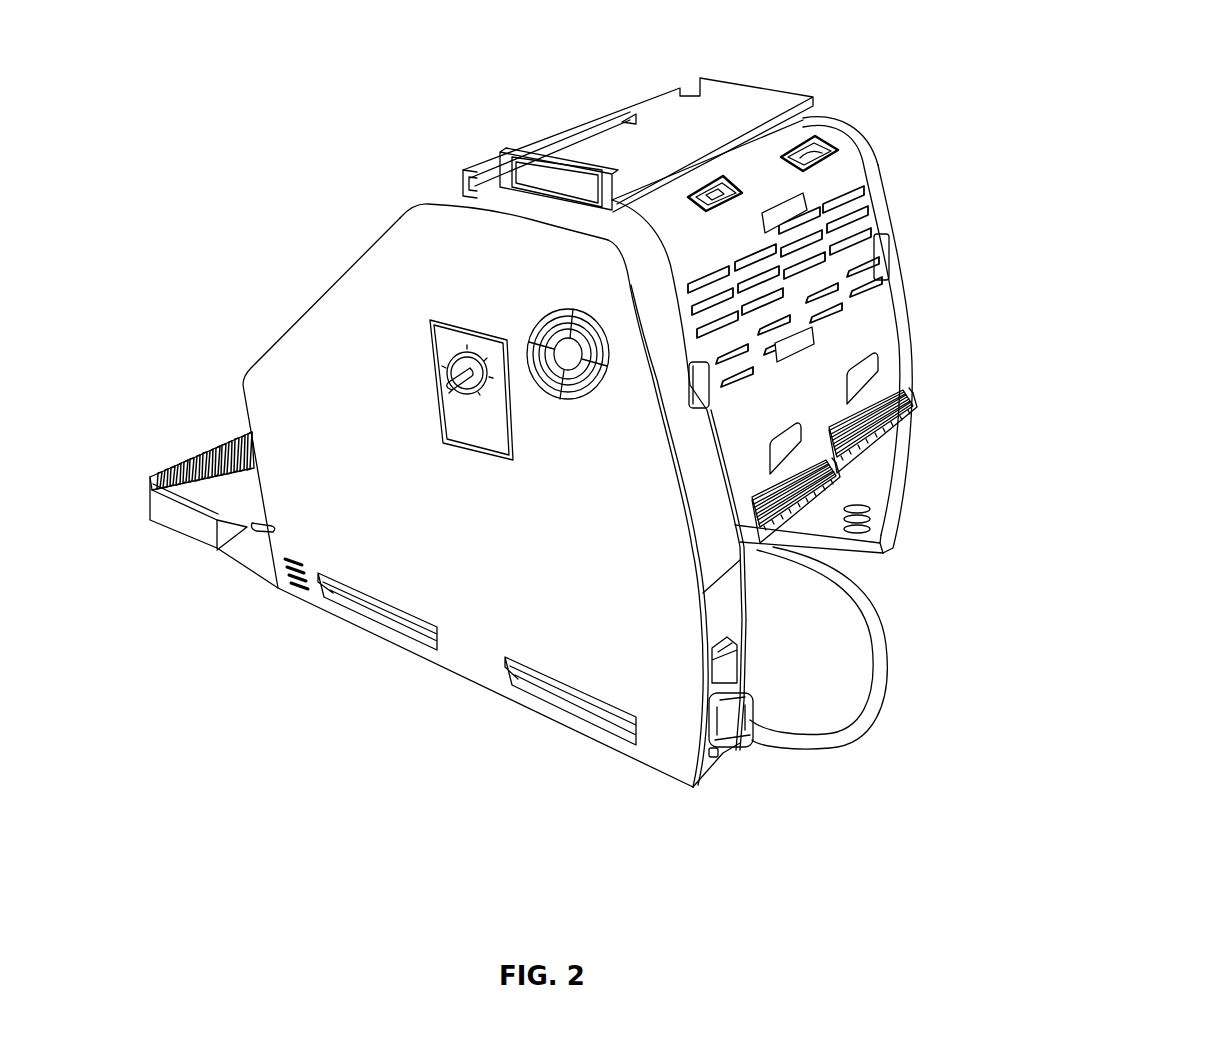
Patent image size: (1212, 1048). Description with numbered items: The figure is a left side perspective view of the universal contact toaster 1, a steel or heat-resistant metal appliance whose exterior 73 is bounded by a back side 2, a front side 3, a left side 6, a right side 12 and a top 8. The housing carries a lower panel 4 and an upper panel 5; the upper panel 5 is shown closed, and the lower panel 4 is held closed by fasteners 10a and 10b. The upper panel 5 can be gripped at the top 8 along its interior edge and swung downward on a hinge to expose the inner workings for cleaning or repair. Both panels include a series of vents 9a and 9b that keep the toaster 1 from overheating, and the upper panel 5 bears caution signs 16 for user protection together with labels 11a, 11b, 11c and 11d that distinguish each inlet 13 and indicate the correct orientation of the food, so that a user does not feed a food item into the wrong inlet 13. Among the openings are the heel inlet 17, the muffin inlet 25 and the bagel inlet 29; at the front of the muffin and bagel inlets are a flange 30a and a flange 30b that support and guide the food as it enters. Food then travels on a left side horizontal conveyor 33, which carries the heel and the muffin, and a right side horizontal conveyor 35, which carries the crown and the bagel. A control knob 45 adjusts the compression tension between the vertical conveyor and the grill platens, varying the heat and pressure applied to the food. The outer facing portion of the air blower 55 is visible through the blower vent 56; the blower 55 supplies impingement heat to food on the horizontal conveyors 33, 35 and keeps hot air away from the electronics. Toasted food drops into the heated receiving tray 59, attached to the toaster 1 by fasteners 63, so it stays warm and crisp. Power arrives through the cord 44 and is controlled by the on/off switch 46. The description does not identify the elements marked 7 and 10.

The universal contact toaster 1 is at (388, 42).
The back side 2 is at (957, 510).
The front side 3 is at (318, 298).
The lower panel 4 is at (873, 318).
The upper panel 5 is at (842, 148).
The left side 6 is at (668, 462).
The outer rounded top corner 7 is at (876, 163).
The top 8 is at (652, 112).
The vents 9a is at (858, 190).
The vents 9b is at (880, 265).
The base plate end 10 is at (882, 532).
The fastener 10a is at (687, 385).
The fastener 10b is at (880, 258).
The label 11a is at (706, 192).
The label 11b is at (818, 137).
The label 11c is at (800, 445).
The label 11d is at (887, 377).
The right side 12 is at (905, 300).
The inlet 13 is at (887, 440).
The caution signs 16 is at (573, 176).
The heel inlet 17 is at (533, 148).
The muffin inlet 25 is at (703, 563).
The bagel inlet 29 is at (867, 488).
The flange 30a is at (790, 545).
The flange 30b is at (880, 470).
The left side horizontal conveyor 33 is at (742, 490).
The right side horizontal conveyor 35 is at (906, 412).
The cord 44 is at (722, 750).
The control knob 45 is at (448, 371).
The on/off switch 46 is at (735, 663).
The air blower 55 is at (533, 325).
The blower vent 56 is at (578, 324).
The receiving tray 59 is at (160, 502).
The fasteners 63 is at (217, 550).
The exterior 73 is at (534, 718).